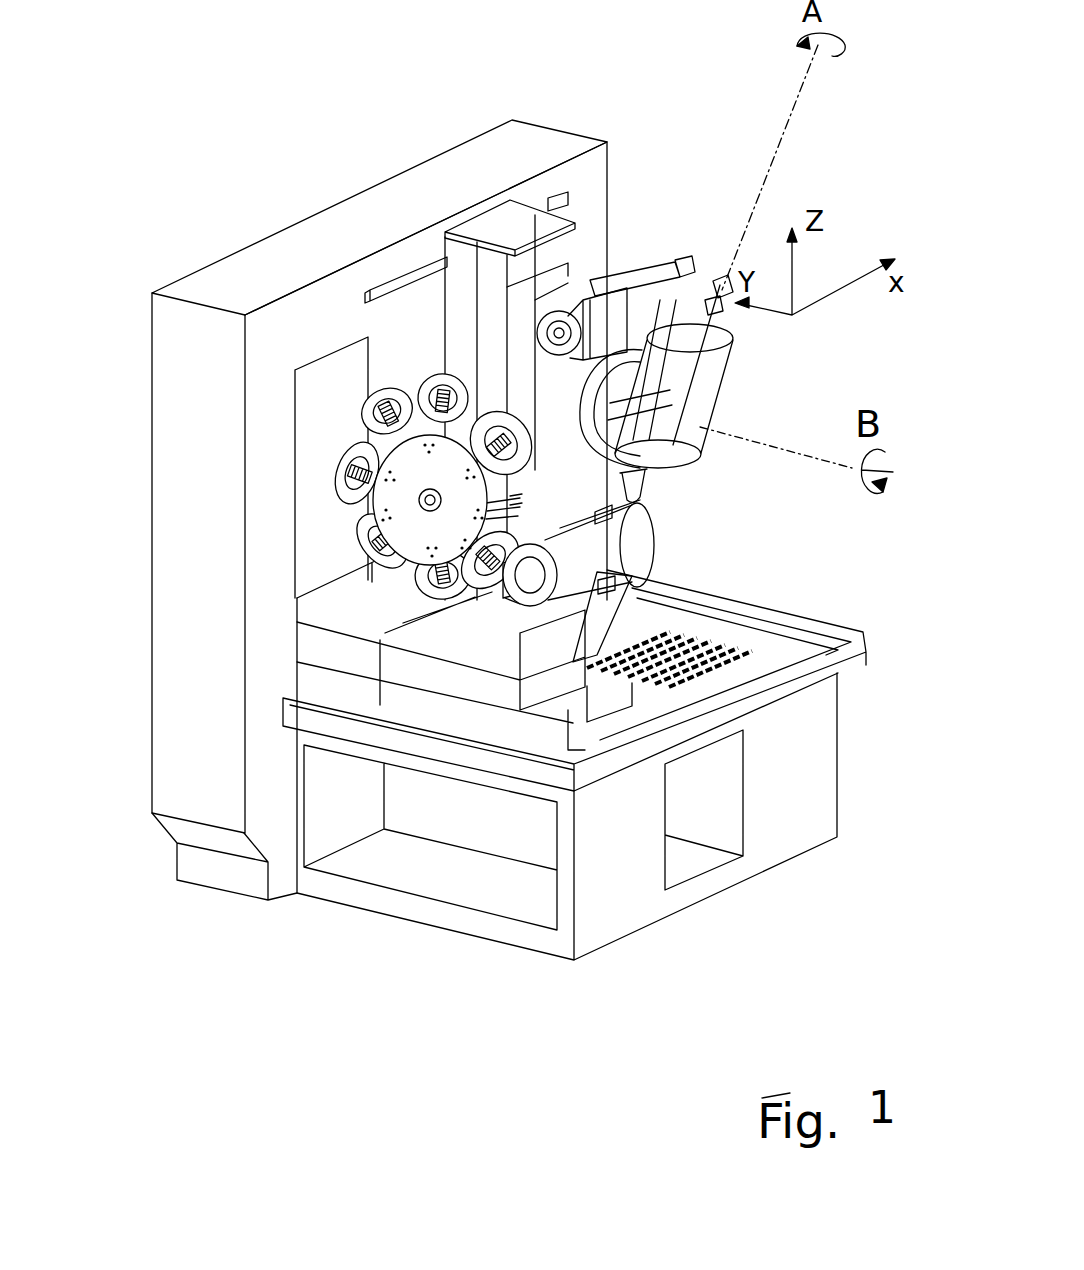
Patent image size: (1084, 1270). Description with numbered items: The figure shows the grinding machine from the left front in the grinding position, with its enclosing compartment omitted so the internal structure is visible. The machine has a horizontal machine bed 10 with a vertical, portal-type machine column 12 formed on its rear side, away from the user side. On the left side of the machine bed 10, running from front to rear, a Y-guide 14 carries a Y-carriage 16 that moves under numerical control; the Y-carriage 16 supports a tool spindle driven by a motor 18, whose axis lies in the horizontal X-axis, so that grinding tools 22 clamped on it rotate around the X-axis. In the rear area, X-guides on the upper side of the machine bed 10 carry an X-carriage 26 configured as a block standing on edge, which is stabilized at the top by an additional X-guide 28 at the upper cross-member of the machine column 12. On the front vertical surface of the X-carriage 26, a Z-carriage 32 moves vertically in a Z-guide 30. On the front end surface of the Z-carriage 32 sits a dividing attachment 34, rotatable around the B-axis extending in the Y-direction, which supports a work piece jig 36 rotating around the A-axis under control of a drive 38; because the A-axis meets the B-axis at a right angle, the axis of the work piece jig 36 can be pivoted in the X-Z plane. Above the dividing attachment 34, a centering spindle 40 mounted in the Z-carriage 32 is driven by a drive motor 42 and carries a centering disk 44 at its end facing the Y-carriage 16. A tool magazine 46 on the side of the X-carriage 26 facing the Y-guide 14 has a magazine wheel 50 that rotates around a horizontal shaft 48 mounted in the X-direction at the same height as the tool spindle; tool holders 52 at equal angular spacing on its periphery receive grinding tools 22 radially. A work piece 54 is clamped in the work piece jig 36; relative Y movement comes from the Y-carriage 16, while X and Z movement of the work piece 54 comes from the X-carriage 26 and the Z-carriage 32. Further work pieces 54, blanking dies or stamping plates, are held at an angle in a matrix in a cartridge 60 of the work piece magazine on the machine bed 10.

The machine bed 10 is at (757, 852).
The machine column 12 is at (202, 797).
The Y-guide 14 is at (485, 722).
The Y-carriage 16 is at (507, 693).
The motor 18 is at (547, 577).
The grinding tools 22 is at (440, 383).
The X-carriage 26 is at (463, 297).
The additional X-guide 28 is at (560, 205).
The Z-guide 30 is at (487, 263).
The Z-carriage 32 is at (521, 313).
The dividing attachment 34 is at (637, 440).
The work piece jig 36 is at (638, 477).
The drive 38 is at (660, 375).
The centering spindle 40 is at (582, 292).
The drive motor 42 is at (647, 273).
The centering disk 44 is at (557, 317).
The tool magazine 46 is at (400, 517).
The horizontal shaft 48 is at (433, 503).
The magazine wheel 50 is at (402, 475).
The tool holders 52 is at (363, 417).
The work piece 54 is at (633, 500).
The cartridge 60 is at (711, 677).